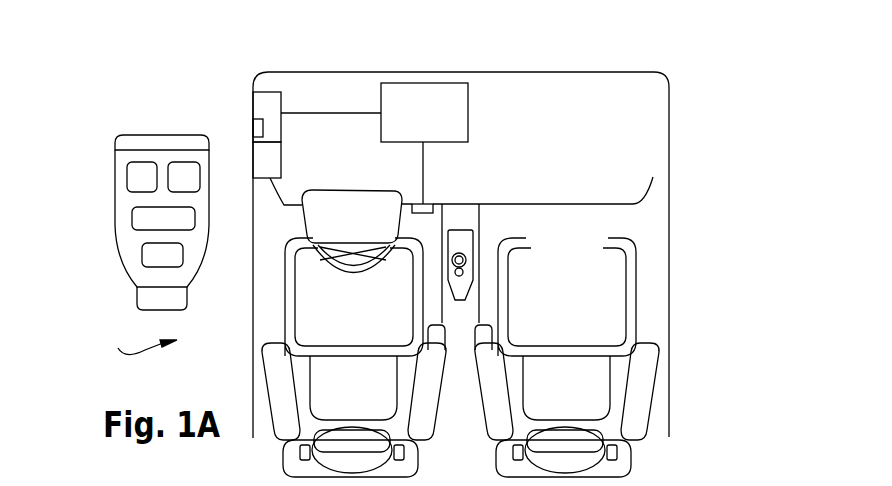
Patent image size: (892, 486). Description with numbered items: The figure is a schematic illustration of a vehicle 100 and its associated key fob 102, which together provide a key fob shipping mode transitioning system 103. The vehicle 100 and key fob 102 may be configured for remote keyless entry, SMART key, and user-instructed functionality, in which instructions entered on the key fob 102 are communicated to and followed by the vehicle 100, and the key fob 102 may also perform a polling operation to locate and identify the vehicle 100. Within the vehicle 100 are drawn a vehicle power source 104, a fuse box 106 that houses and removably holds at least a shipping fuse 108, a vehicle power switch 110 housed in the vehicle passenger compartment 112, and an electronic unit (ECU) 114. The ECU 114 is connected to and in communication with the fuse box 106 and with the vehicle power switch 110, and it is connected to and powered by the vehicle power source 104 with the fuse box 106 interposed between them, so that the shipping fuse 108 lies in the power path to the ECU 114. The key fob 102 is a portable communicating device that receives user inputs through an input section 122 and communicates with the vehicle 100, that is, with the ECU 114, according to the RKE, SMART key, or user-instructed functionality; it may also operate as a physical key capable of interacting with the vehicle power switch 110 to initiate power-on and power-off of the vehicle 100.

The vehicle 100 is at (437, 58).
The key fob 102 is at (139, 184).
The key fob shipping mode transitioning system 103 is at (136, 342).
The vehicle power source 104 is at (262, 160).
The fuse box 106 is at (262, 107).
The shipping fuse 108 is at (263, 130).
The vehicle power switch 110 is at (432, 206).
The vehicle passenger compartment 112 is at (638, 231).
The electronic unit (ECU) 114 is at (468, 117).
The input section 122 is at (138, 177).